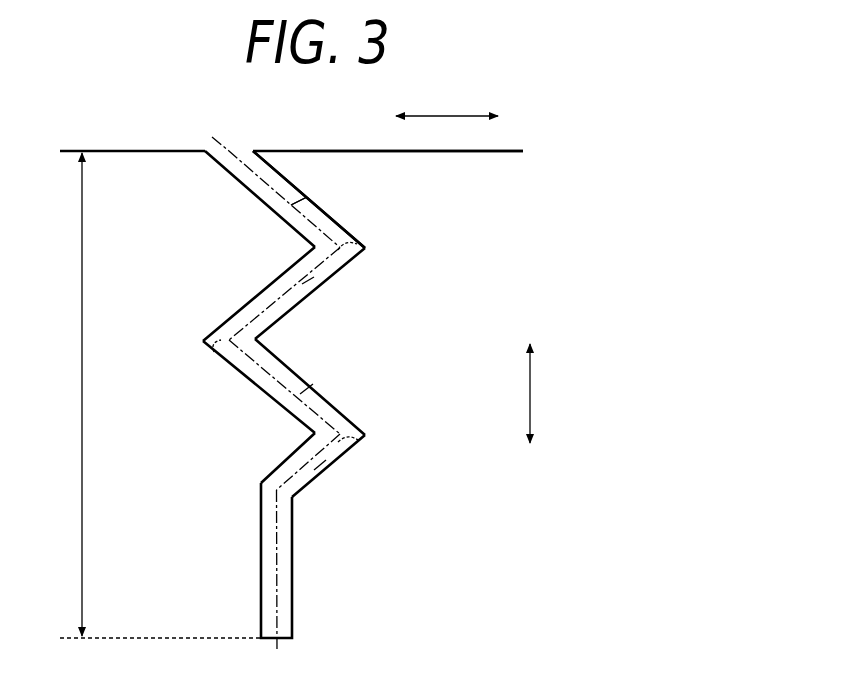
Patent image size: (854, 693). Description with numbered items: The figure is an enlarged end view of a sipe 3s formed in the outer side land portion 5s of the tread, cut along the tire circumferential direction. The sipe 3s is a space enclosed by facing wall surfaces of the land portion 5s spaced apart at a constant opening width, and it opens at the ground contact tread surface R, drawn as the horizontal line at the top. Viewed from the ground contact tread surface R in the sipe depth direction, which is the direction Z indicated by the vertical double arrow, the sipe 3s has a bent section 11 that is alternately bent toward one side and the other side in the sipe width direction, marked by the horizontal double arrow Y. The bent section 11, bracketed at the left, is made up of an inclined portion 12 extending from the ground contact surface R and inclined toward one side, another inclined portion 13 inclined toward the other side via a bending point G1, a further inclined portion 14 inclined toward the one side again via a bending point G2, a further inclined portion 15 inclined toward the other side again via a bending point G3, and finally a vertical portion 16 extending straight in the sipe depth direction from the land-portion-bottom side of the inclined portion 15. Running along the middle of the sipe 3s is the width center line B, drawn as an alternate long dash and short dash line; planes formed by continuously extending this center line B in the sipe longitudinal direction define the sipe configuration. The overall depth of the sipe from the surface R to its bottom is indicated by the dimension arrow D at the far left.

The outer side land portion 5s is at (134, 102).
The sipe 3s is at (243, 150).
The ground contact tread surface R is at (325, 150).
The width center line B is at (266, 190).
The bent section 11 is at (268, 370).
The inclined portion 12 is at (306, 194).
The inclined portion 13 is at (314, 292).
The inclined portion 14 is at (306, 380).
The inclined portion 15 is at (325, 470).
The vertical portion 16 is at (248, 567).
The bending point G1 is at (366, 248).
The bending point G2 is at (212, 345).
The bending point G3 is at (366, 437).
The slit depth D is at (160, 395).
The Y direction Y is at (447, 102).
The direction Z is at (539, 393).